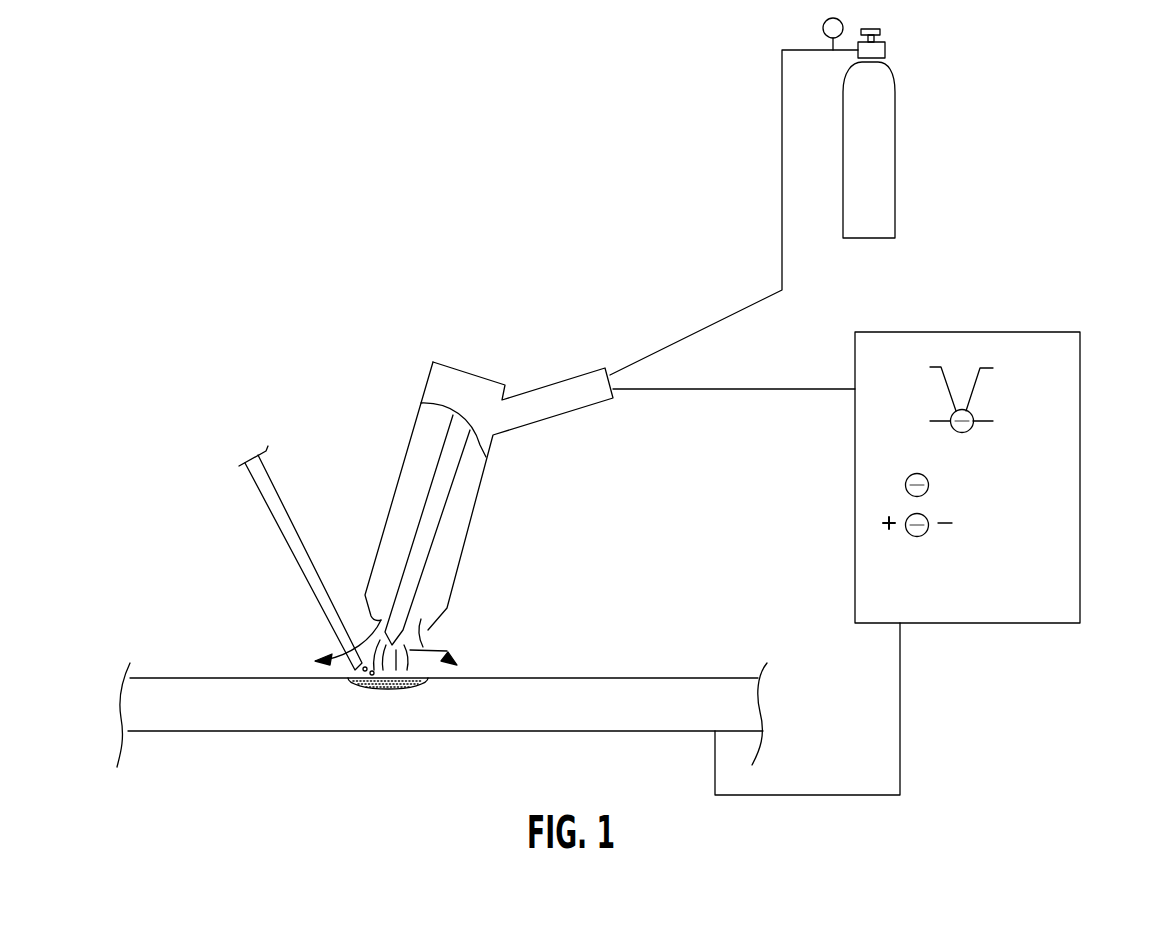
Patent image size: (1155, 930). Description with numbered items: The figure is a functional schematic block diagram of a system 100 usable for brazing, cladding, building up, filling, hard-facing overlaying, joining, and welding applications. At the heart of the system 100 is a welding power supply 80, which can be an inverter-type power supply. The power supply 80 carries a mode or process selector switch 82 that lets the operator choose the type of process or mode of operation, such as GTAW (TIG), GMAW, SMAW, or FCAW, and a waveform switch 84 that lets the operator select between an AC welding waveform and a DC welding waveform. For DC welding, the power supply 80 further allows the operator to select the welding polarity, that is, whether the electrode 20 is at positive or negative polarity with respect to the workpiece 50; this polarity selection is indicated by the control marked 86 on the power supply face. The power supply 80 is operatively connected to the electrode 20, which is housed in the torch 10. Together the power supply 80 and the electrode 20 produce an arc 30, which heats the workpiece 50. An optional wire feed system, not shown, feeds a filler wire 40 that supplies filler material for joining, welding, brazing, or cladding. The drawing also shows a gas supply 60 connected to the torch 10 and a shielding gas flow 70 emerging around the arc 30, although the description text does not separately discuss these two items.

The system 100 is at (424, 134).
The torch 10 is at (480, 481).
The electrode 20 is at (435, 523).
The arc 30 is at (424, 646).
The filler wire 40 is at (280, 500).
The workpiece 50 is at (388, 731).
The gas supply 60 is at (895, 98).
The shielding gas 70 is at (447, 651).
The welding power supply 80 is at (1003, 467).
The mode or process selector switch 82 is at (968, 434).
The waveform switch 84 is at (924, 473).
The polarity selector 86 is at (925, 539).